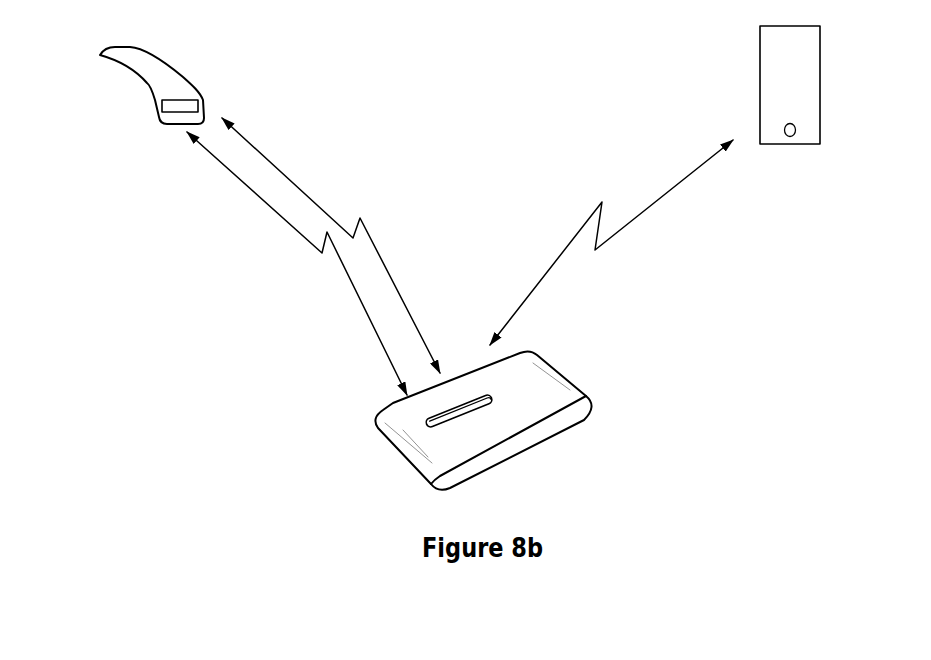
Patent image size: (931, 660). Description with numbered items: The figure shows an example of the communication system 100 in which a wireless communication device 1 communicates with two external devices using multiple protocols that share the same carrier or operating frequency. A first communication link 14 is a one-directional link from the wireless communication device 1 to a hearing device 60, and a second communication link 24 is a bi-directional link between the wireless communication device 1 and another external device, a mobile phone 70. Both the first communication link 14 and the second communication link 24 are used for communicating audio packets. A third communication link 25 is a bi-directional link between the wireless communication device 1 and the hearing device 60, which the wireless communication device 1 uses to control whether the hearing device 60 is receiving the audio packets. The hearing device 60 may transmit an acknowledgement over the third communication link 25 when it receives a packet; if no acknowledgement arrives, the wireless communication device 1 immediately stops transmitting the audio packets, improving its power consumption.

The wireless communication device 1 is at (400, 447).
The first communication link 14 is at (303, 188).
The second communication link 24 is at (715, 172).
The third communication link 25 is at (297, 233).
The hearing device 60 is at (147, 83).
The mobile phone 70 is at (775, 80).
The communication system 100 is at (152, 279).